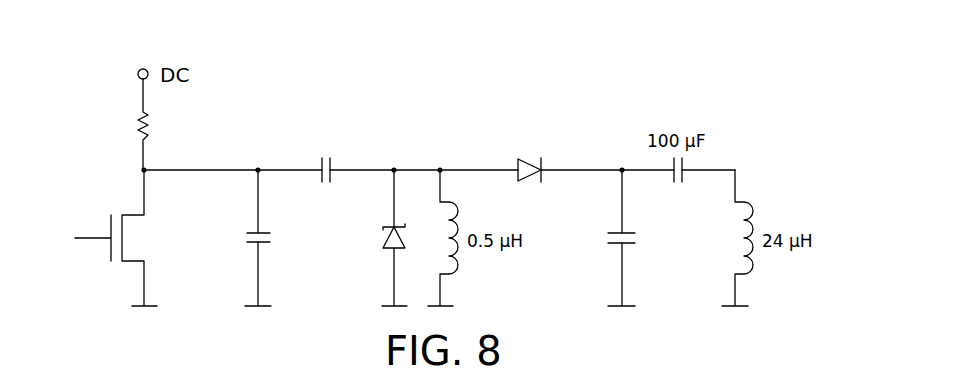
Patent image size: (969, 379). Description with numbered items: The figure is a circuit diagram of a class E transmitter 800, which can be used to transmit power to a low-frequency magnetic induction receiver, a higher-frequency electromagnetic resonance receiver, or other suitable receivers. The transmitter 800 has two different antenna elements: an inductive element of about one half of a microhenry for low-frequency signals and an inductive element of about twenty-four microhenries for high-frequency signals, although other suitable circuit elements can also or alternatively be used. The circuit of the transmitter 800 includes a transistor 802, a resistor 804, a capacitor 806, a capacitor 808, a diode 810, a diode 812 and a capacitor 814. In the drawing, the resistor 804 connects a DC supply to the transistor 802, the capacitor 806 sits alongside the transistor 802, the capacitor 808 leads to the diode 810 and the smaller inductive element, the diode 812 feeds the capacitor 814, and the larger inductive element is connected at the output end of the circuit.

The class E transmitter 800 is at (768, 147).
The transistor 802 is at (107, 250).
The resistor 804 is at (139, 121).
The capacitor 806 is at (246, 235).
The capacitor 808 is at (325, 156).
The diode 810 is at (384, 232).
The diode 812 is at (529, 162).
The capacitor 814 is at (632, 239).